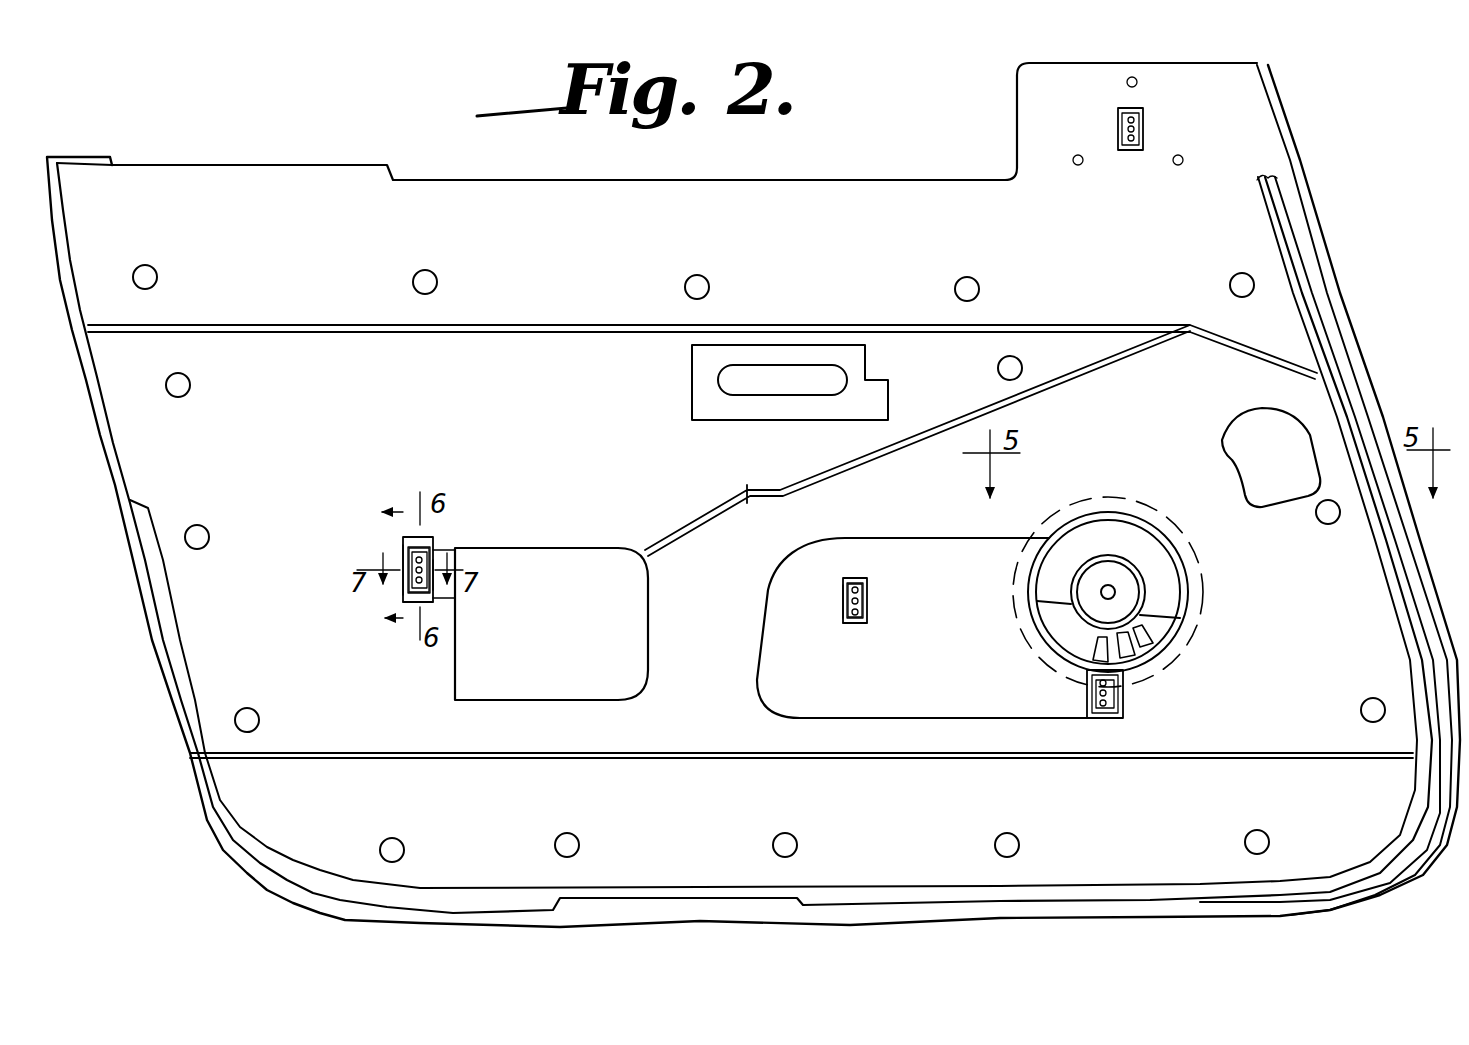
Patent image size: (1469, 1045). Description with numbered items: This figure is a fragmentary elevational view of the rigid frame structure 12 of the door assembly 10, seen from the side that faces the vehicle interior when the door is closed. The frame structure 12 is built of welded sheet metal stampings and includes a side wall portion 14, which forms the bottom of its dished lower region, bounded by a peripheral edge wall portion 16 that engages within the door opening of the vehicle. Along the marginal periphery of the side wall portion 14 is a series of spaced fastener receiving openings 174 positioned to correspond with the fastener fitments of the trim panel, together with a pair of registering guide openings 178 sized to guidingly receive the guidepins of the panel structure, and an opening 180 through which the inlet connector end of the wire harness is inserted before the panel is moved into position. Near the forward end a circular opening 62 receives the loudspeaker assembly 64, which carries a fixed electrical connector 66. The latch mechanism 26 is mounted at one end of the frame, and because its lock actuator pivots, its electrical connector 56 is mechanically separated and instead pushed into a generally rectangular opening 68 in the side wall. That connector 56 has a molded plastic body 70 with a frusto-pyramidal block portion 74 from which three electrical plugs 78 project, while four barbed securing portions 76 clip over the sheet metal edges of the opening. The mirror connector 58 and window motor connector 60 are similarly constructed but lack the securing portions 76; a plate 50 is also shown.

The door assembly 10 is at (873, 140).
The rigid frame structure 12 is at (1324, 224).
The side wall portion 14 is at (203, 668).
The peripheral edge wall portion 16 is at (162, 588).
The latch mechanism 26 is at (735, 375).
The mounting plate 50 is at (700, 398).
The electrical connector 56 is at (400, 545).
The electrical connector 58 is at (1116, 126).
The electrical connector 60 is at (874, 603).
The circular opening 62 is at (1170, 636).
The loudspeaker assembly 64 is at (1149, 667).
The electrical connector 66 is at (1088, 692).
The rectangular opening 68 is at (432, 545).
The molded body 70 is at (437, 553).
The block portion 74 is at (405, 590).
The securing portions 76 is at (440, 592).
The electrical plugs 78 is at (404, 566).
The fastener receiving openings 174 is at (413, 282).
The guide openings 178 is at (190, 388).
The opening 180 is at (1240, 457).